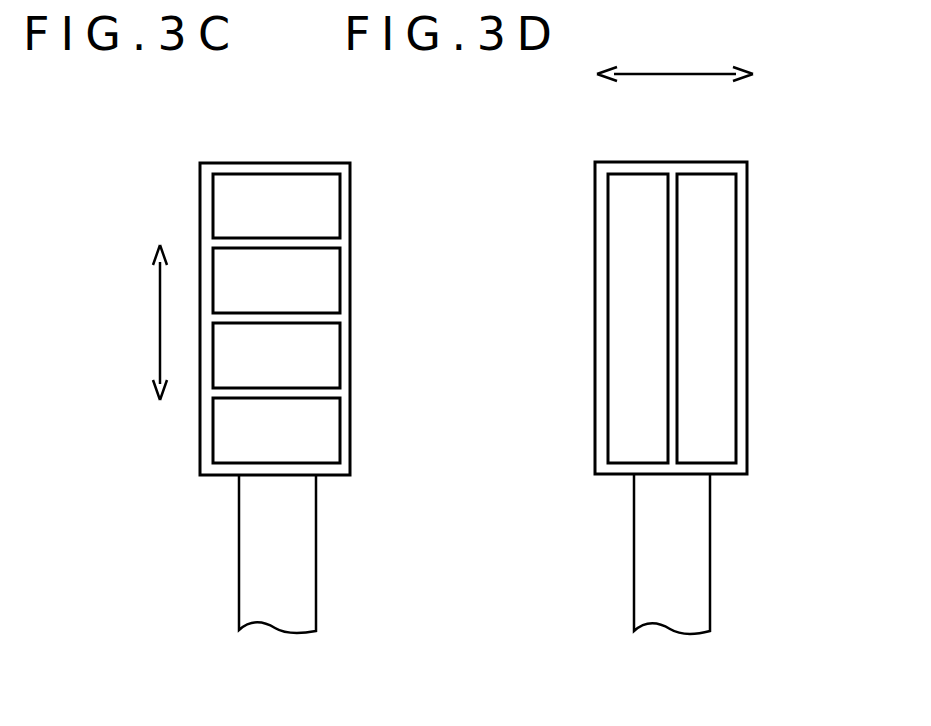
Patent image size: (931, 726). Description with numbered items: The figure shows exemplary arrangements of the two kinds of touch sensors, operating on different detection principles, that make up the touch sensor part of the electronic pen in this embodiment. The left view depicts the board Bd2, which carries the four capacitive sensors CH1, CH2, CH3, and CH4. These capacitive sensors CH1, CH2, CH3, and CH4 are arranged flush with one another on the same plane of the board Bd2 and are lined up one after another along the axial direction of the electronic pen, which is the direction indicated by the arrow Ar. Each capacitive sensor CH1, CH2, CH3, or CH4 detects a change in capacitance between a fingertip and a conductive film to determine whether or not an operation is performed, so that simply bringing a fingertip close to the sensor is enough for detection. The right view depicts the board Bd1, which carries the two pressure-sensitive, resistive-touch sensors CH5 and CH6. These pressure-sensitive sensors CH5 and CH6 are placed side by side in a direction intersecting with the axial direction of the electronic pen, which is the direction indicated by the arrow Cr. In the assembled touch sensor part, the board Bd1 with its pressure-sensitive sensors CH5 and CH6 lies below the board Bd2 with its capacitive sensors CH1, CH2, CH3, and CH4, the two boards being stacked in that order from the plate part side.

In FIG. 3C, the capacitive sensor CH1 is at (276, 206).
In FIG. 3C, the capacitive sensor CH2 is at (276, 280).
In FIG. 3C, the capacitive sensor CH3 is at (276, 355).
In FIG. 3C, the capacitive sensor CH4 is at (276, 430).
In FIG. 3D, the pressure-sensitive sensor CH5 is at (637, 185).
In FIG. 3D, the pressure-sensitive sensor CH6 is at (705, 185).
In FIG. 3D, the board Bd1 is at (748, 312).
In FIG. 3C, the board Bd2 is at (350, 300).
In FIG. 3C, the arrow Ar is at (160, 315).
In FIG. 3D, the arrow Cr is at (670, 74).